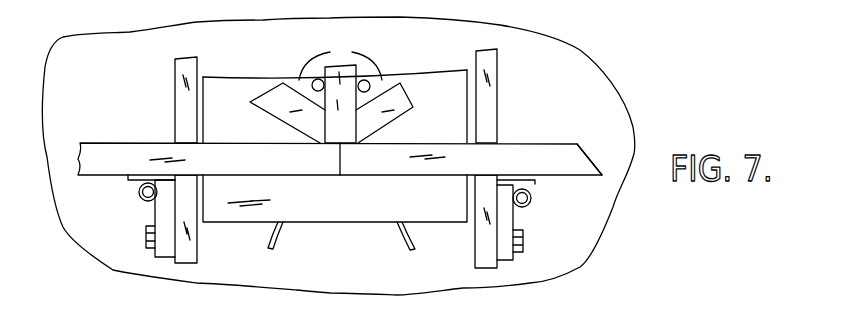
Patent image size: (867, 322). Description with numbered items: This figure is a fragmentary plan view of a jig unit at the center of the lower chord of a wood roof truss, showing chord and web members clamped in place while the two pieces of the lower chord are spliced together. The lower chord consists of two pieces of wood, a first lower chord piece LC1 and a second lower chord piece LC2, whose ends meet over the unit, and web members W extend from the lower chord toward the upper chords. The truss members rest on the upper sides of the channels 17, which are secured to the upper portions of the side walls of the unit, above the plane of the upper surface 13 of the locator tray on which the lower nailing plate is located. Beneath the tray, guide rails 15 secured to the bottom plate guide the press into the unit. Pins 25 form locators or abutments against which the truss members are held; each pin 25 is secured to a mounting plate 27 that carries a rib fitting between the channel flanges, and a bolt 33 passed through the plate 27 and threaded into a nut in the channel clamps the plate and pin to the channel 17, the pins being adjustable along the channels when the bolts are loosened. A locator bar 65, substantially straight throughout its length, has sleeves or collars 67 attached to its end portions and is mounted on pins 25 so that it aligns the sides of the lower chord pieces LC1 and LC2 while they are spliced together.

The upper surface of locator tray 13 is at (432, 213).
The guide rails 15 is at (272, 246).
The channels 17 is at (495, 64).
The pins 25 is at (315, 91).
The mounting plate 27 is at (164, 258).
The bolt 33 is at (145, 238).
The locator bar 65 is at (329, 193).
The sleeves or collars 67 is at (140, 197).
The web members W is at (340, 58).
The lower chord piece LC1 is at (112, 138).
The lower chord piece LC2 is at (547, 145).